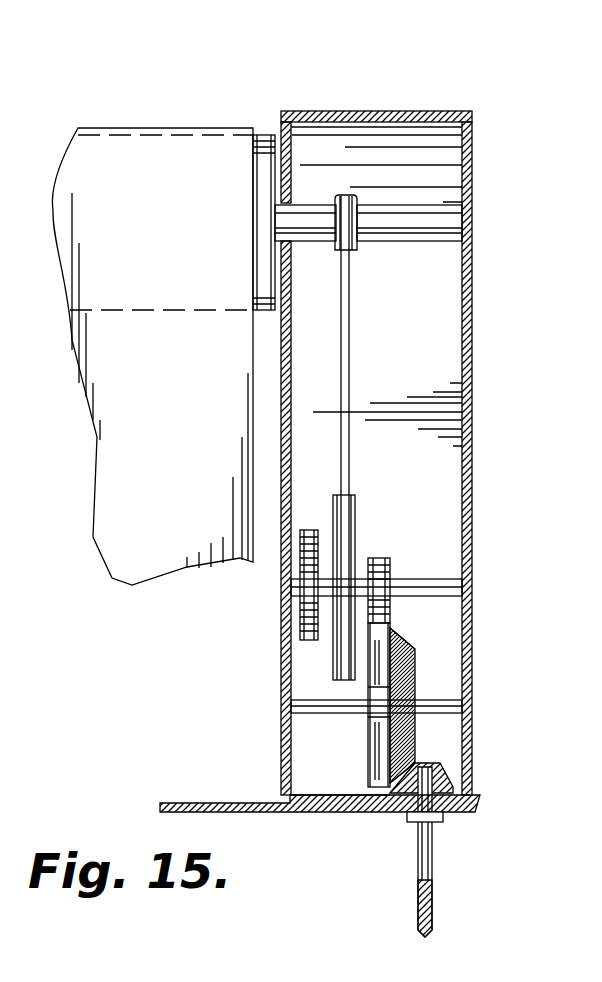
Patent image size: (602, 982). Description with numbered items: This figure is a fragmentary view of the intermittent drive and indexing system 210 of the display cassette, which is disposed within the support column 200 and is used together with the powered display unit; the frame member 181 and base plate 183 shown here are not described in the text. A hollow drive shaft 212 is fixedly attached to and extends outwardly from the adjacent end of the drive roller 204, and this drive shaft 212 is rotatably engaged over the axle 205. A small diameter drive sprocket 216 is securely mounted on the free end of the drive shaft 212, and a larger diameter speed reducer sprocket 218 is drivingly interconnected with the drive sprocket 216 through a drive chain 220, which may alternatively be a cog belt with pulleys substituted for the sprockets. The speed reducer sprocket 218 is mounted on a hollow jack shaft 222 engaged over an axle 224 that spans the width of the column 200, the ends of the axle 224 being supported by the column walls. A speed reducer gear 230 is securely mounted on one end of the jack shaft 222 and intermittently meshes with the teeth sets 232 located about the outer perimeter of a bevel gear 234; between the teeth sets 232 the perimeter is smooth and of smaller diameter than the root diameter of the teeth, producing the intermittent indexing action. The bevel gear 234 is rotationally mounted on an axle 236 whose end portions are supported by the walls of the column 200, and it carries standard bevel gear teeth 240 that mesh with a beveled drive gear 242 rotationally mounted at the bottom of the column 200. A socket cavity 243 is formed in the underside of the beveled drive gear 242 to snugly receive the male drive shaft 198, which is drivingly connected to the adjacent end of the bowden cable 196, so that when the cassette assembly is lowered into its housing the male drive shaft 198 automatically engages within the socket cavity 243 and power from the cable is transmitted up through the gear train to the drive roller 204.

The frame member 181 is at (185, 436).
The base plate 183 is at (462, 812).
The bowden cable 196 is at (432, 912).
The male drive shaft 198 is at (400, 812).
The column 200 is at (440, 112).
The drive roller 204 is at (268, 133).
The axle 205 is at (407, 217).
The intermittent drive and indexing system 210 is at (415, 468).
The hollow drive shaft 212 is at (300, 208).
The drive sprocket 216 is at (363, 240).
The speed reducer sprocket 218 is at (358, 515).
The drive chain 220 is at (350, 368).
The jack shaft 222 is at (363, 548).
The axle 224 is at (441, 577).
The speed reducer gear 230 is at (392, 603).
The teeth sets 232 is at (367, 690).
The bevel gear 234 is at (417, 682).
The axle 236 is at (437, 712).
The bevel gear teeth 240 is at (417, 658).
The beveled drive gear 242 is at (440, 772).
The socket cavity 243 is at (368, 812).